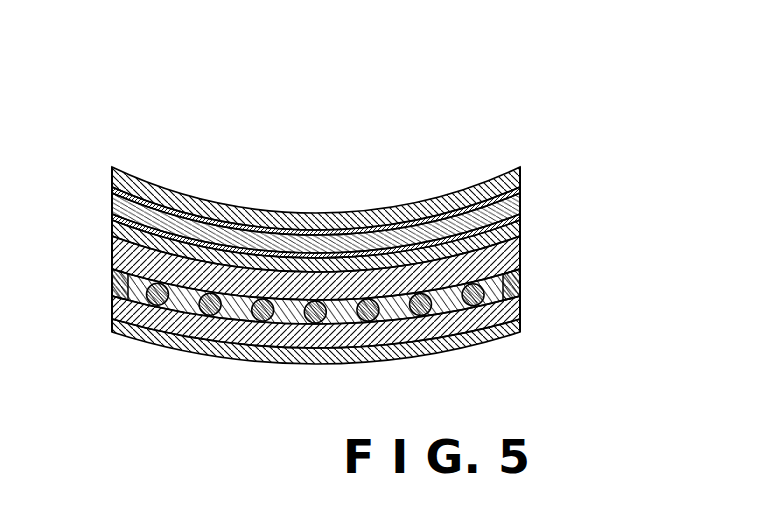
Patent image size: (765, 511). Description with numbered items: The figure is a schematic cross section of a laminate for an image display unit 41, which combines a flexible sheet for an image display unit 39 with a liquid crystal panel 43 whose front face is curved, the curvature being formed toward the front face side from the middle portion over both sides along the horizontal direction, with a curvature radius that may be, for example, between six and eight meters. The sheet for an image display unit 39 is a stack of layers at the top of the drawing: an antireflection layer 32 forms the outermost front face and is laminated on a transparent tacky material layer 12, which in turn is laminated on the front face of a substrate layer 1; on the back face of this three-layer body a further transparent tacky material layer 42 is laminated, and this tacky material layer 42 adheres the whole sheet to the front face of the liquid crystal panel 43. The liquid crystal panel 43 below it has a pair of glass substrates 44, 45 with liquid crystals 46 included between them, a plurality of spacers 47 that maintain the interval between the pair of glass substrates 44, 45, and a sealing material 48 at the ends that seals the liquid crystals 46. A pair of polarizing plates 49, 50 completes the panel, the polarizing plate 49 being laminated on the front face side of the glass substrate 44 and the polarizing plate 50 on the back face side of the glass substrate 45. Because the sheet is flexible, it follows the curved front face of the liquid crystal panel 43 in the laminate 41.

The laminate for an image display unit 41 is at (371, 210).
The sheet for an image display unit 39 is at (379, 179).
The antireflection layer 32 is at (522, 172).
The tacky material layer 12 is at (521, 190).
The substrate layer 1 is at (521, 203).
The tacky material layer 42 is at (355, 218).
The polarizing plate 49 is at (521, 230).
The glass substrate 44 is at (521, 253).
The liquid crystal panel 43 is at (371, 310).
The spacers 47 is at (521, 284).
The liquid crystals 46 is at (189, 316).
The sealing material 48 is at (112, 284).
The glass substrate 45 is at (521, 307).
The polarizing plate 50 is at (521, 328).